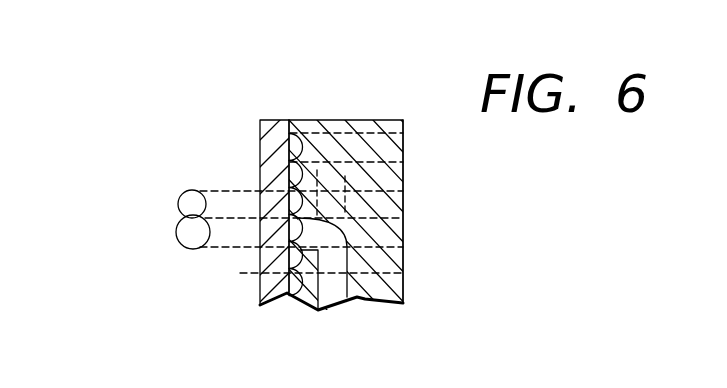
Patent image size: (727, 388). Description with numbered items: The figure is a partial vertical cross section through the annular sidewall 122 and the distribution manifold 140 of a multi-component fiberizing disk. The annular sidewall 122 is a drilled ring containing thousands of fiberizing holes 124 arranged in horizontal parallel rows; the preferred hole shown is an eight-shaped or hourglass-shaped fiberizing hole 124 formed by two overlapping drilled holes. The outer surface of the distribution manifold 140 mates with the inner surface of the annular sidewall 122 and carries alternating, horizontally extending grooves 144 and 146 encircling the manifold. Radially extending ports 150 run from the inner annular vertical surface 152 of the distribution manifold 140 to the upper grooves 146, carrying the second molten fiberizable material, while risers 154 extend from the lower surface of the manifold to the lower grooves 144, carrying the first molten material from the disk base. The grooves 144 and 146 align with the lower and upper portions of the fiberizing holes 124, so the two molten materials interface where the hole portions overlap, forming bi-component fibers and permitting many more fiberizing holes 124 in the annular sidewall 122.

The annular sidewall 122 is at (278, 121).
The fiberizing holes 124 is at (177, 204).
The distribution manifold 140 is at (358, 121).
The grooves 144 is at (288, 174).
The grooves 146 is at (298, 146).
The ports 150 is at (404, 146).
The inner annular vertical surface 152 is at (404, 237).
The risers 154 is at (317, 170).